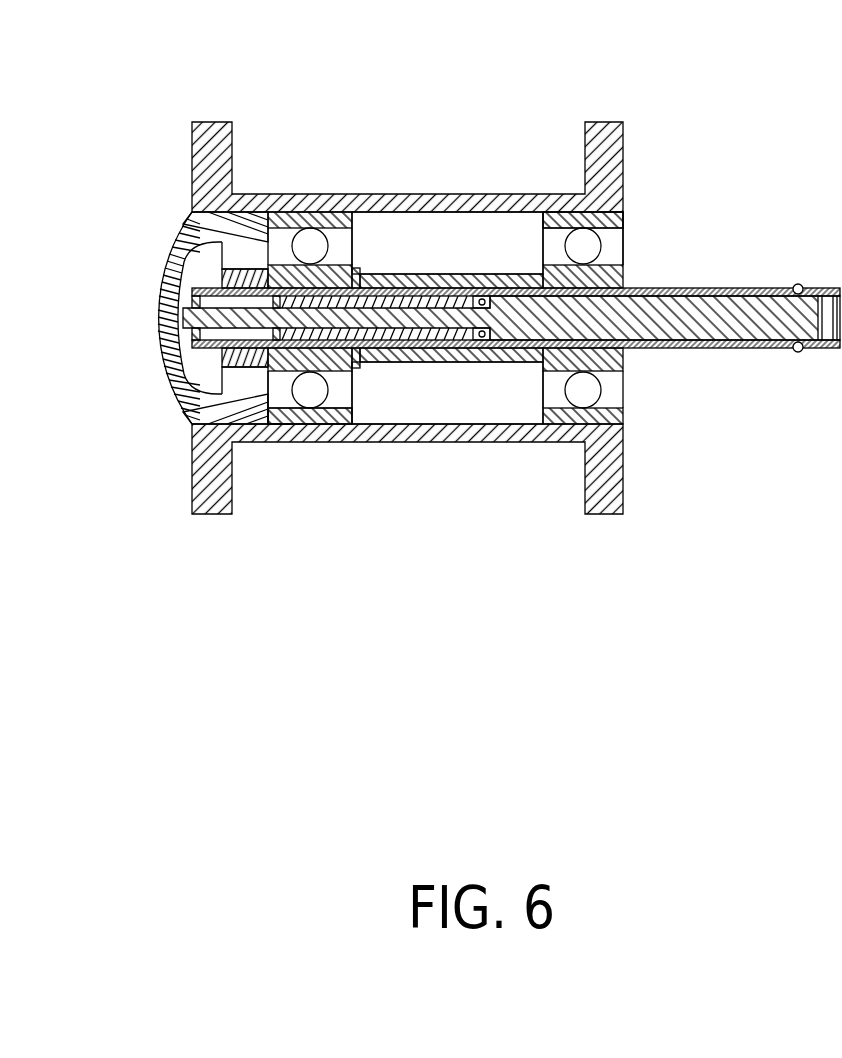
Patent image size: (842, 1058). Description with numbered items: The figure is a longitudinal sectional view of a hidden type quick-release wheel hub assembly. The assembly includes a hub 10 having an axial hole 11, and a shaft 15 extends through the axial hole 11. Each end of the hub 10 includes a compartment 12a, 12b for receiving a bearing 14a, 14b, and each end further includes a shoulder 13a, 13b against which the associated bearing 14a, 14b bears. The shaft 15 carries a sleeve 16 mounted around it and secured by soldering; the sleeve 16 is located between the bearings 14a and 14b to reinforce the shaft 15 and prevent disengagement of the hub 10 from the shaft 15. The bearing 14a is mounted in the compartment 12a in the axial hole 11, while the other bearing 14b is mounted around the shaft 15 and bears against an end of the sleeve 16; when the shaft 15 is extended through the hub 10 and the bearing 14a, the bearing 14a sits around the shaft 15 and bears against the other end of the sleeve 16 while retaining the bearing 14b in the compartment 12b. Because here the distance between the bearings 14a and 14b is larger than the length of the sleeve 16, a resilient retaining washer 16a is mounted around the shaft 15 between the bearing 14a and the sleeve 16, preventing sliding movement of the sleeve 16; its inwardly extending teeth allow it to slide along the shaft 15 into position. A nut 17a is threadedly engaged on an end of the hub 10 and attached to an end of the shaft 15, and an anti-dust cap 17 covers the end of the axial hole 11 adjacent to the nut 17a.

The hub 10 is at (377, 213).
The axial hole 11 is at (438, 243).
The compartment 12a is at (325, 417).
The compartment 12b is at (582, 210).
The shoulder 13a is at (350, 417).
The shoulder 13b is at (540, 210).
The bearing 14a is at (275, 424).
The bearing 14b is at (605, 220).
The shaft 15 is at (692, 346).
The sleeve 16 is at (420, 349).
The resilient retaining washer 16a is at (357, 362).
The anti-dust cap 17 is at (165, 310).
The nut 17a is at (227, 277).